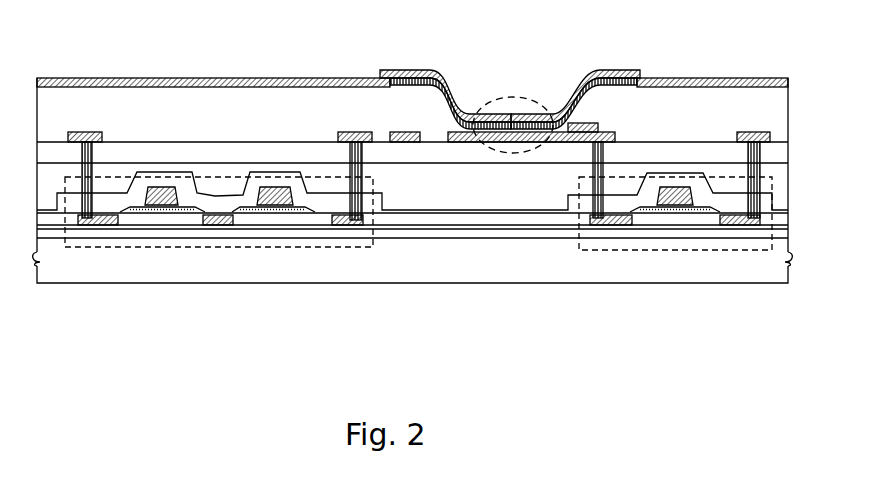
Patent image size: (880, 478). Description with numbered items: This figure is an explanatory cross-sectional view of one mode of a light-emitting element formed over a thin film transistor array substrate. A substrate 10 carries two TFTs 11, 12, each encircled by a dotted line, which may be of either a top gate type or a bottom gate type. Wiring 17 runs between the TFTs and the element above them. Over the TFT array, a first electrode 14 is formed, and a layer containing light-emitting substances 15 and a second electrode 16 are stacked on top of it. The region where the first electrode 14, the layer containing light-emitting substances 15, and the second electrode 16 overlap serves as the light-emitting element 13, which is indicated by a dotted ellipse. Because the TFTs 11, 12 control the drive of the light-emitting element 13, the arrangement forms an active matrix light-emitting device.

The substrate 10 is at (510, 273).
The TFT 11 is at (662, 250).
The TFT 12 is at (203, 247).
The light-emitting element 13 is at (508, 98).
The first electrode 14 is at (467, 133).
The layer containing light-emitting substances 15 is at (607, 70).
The second electrode 16 is at (437, 72).
The wiring 17 is at (612, 128).